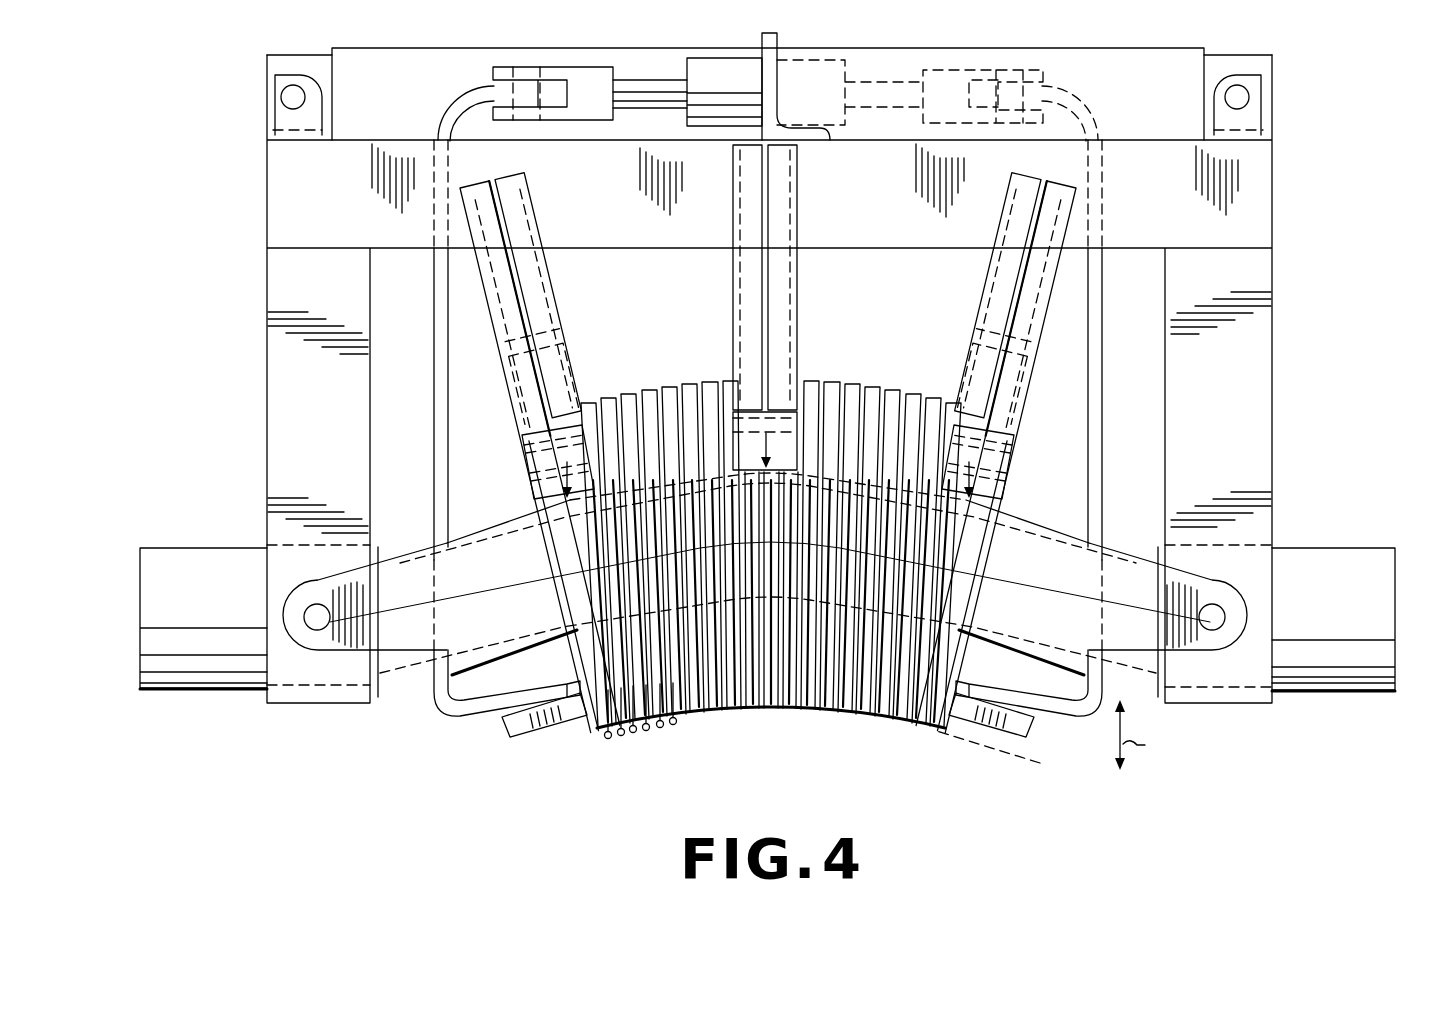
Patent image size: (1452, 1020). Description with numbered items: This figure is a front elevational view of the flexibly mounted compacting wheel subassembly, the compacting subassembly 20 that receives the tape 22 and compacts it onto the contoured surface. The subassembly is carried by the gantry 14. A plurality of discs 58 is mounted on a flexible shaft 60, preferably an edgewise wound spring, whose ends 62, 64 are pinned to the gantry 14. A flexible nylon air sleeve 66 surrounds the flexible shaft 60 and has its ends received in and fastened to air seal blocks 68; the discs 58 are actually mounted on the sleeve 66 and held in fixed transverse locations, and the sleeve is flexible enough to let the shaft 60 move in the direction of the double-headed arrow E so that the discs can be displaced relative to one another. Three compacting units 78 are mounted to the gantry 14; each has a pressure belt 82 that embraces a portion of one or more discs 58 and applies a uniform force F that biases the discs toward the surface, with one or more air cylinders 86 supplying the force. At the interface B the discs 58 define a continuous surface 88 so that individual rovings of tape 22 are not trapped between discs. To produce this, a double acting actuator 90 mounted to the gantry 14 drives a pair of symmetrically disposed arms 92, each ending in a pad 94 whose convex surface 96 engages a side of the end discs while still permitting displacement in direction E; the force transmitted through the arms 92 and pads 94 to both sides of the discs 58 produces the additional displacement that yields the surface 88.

The gantry 14 is at (280, 285).
The compacting subassembly 20 is at (767, 405).
The tape 22 is at (603, 737).
The discs 58 is at (628, 400).
The flexible shaft 60 is at (1033, 538).
The end of flexible shaft 62 is at (318, 628).
The end of flexible shaft 64 is at (1212, 625).
The flexible nylon air sleeve 66 is at (407, 540).
The air seal blocks 68 is at (204, 548).
The compacting units 78 is at (557, 285).
The pressure belt 82 is at (525, 460).
The air cylinders 86 is at (538, 313).
The continuous surface 88 is at (838, 714).
The double acting actuator 90 is at (805, 60).
The arms 92 is at (1093, 372).
The pads 94 is at (960, 714).
The convex surface 96 is at (585, 688).